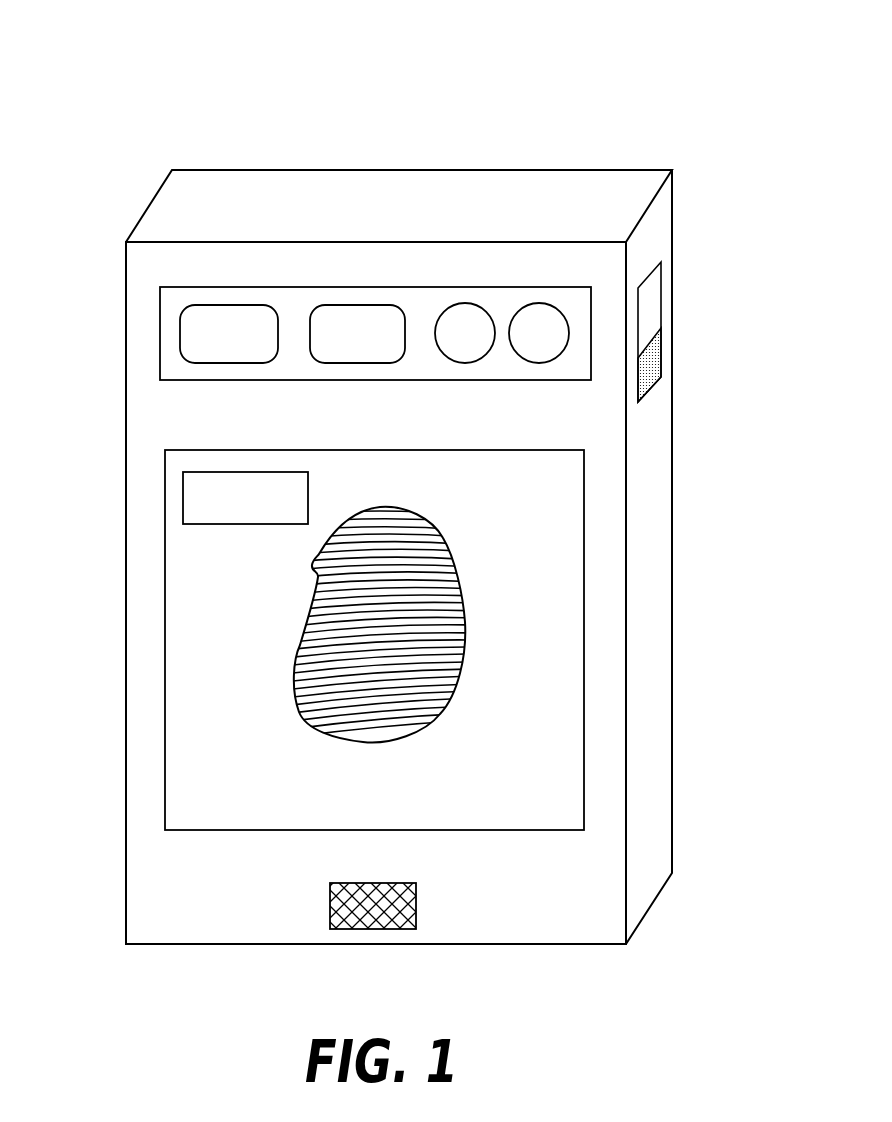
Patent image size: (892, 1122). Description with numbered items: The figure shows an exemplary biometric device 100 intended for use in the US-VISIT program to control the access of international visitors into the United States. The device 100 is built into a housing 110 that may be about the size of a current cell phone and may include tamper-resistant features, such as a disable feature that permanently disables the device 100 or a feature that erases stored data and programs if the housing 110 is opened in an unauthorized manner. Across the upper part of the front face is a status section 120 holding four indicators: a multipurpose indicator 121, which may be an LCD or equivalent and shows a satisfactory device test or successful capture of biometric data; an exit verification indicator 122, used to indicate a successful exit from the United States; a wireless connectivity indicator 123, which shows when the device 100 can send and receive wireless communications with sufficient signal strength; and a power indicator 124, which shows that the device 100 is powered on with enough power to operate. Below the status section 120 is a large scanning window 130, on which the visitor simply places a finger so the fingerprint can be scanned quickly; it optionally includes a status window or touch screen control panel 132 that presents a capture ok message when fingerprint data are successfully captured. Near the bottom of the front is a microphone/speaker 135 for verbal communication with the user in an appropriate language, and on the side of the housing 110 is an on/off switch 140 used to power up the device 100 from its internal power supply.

The biometric device 100 is at (712, 112).
The housing 110 is at (671, 648).
The status section 120 is at (160, 334).
The multipurpose indicator 121 is at (233, 364).
The exit verification indicator 122 is at (353, 364).
The wireless connectivity indicator 123 is at (455, 364).
The power indicator 124 is at (532, 364).
The scanning window 130 is at (552, 568).
The status window or touch screen control panel 132 is at (235, 525).
The microphone/speaker 135 is at (416, 905).
The on/off switch 140 is at (650, 320).